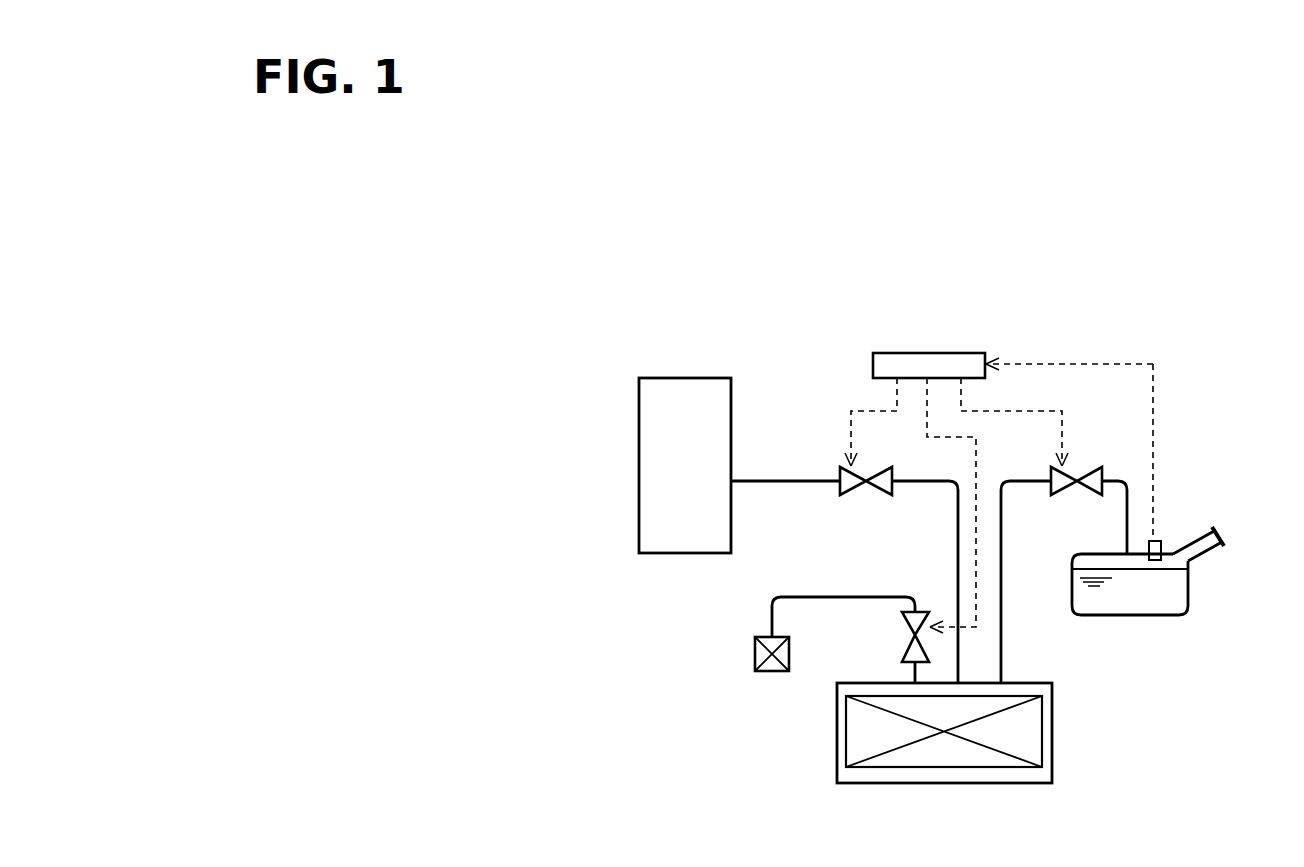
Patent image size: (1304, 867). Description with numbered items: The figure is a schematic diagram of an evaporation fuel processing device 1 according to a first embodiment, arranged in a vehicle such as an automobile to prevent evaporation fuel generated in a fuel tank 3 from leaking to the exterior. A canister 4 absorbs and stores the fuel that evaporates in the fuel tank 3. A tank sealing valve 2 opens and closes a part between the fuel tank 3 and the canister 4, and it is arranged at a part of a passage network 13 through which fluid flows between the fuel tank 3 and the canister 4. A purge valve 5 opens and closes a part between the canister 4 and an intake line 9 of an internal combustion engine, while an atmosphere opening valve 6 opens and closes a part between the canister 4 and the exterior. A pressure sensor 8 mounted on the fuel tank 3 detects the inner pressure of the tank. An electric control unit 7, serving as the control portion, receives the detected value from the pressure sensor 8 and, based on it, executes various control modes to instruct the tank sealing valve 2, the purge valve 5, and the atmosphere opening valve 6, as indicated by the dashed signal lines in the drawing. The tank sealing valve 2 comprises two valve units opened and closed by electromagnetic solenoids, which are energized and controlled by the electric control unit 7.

The evaporation fuel processing device 1 is at (1232, 288).
The tank sealing valve 2 is at (1089, 470).
The fuel tank 3 is at (1175, 597).
The canister 4 is at (1033, 734).
The purge valve 5 is at (843, 487).
The atmosphere opening valve 6 is at (907, 652).
The electric control unit (ECU) 7 is at (873, 365).
The pressure sensor 8 is at (1161, 545).
The intake line 9 is at (660, 463).
The passage network 13 is at (1003, 541).